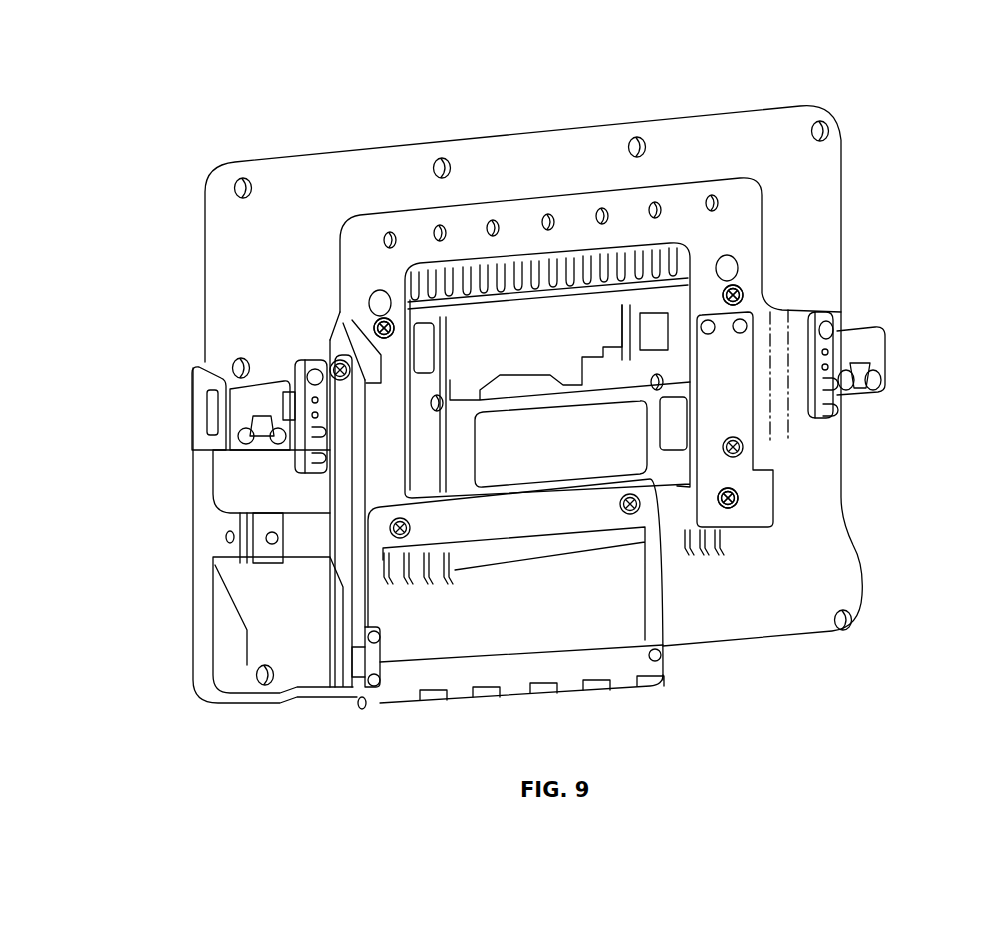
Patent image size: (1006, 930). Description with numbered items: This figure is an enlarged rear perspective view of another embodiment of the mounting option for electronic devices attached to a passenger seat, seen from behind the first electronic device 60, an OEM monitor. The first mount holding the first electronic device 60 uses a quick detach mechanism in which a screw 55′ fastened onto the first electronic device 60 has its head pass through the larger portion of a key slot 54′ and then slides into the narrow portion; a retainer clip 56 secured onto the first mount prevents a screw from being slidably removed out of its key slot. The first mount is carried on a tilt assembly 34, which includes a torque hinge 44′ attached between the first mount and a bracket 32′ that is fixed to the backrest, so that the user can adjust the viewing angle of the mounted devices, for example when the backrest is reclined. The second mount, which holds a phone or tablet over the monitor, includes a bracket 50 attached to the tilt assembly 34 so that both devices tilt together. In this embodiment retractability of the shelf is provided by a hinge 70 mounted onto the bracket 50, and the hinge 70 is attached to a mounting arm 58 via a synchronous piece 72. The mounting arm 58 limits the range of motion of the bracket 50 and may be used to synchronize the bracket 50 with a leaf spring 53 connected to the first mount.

The first electronic device 60 is at (654, 118).
The key slot 54′ is at (380, 305).
The screw 55′ is at (384, 328).
The tilt assembly 34 is at (884, 293).
The retainer clip 56 is at (737, 416).
The bracket 32′ is at (236, 400).
The torque hinge 44′ is at (293, 390).
The mounting arm 58 is at (357, 463).
The leaf spring 53 is at (310, 548).
The synchronous piece 72 is at (377, 667).
The hinge 70 is at (600, 660).
The bracket 50 is at (570, 513).